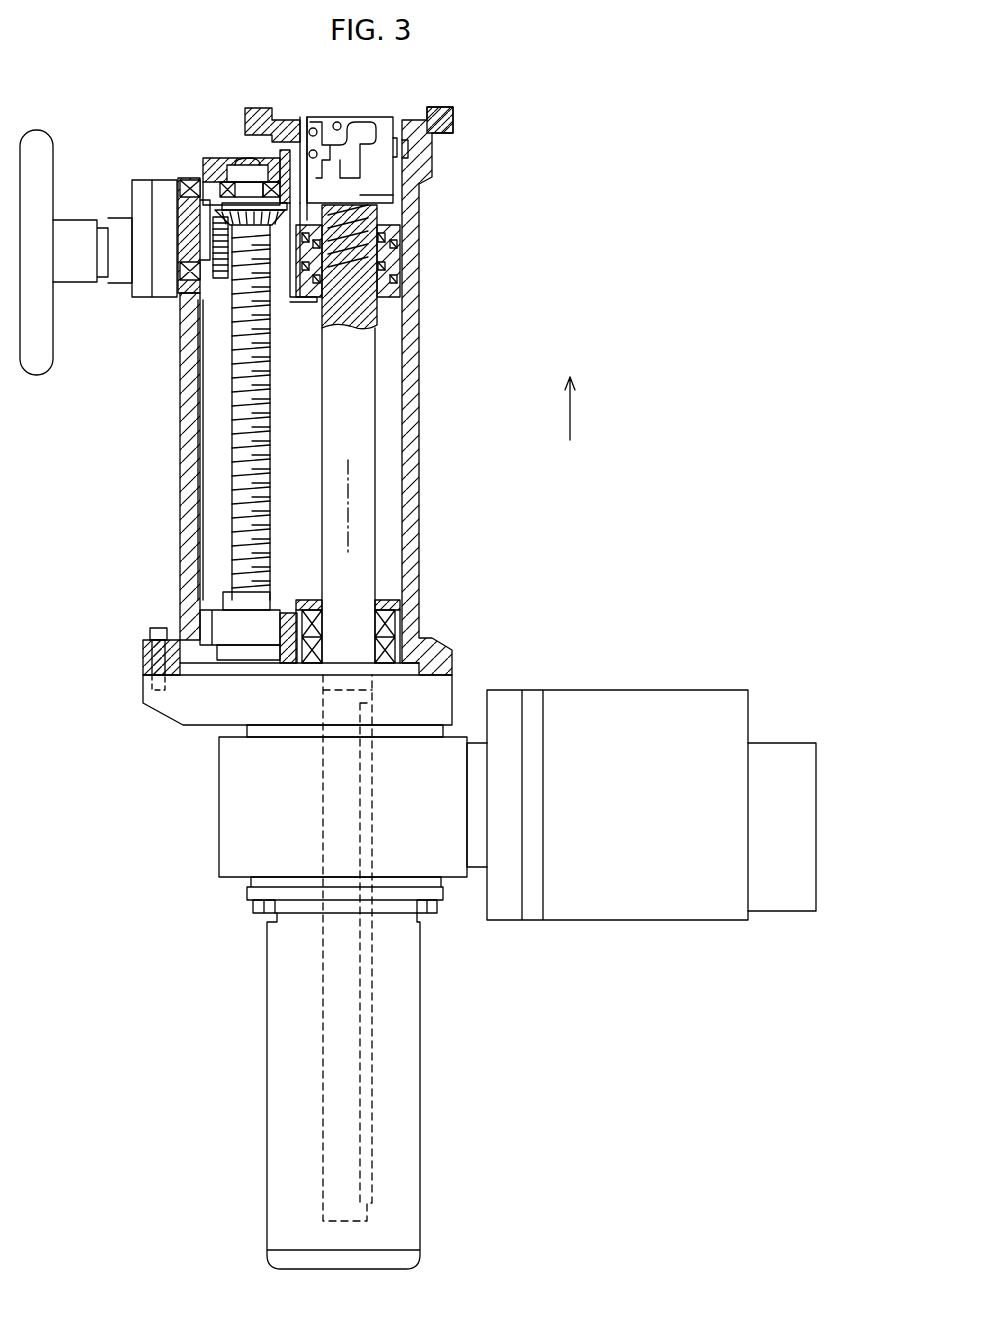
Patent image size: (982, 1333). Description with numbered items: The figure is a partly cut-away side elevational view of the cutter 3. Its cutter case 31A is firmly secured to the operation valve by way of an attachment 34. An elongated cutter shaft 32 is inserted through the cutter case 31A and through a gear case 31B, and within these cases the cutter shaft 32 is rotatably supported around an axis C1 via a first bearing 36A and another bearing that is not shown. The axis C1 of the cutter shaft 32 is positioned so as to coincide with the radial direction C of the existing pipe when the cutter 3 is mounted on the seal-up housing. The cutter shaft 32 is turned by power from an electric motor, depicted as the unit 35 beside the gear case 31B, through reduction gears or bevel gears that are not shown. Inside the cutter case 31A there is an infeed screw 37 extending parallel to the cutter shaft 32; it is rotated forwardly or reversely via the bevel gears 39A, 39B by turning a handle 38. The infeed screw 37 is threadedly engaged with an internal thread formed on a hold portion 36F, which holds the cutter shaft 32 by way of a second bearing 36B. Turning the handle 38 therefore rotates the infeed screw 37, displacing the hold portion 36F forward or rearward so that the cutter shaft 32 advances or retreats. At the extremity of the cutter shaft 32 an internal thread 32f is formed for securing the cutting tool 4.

The cutter 3 is at (568, 297).
The cutting tool 4 is at (360, 116).
The attachment 34 is at (452, 122).
The bevel gear 39B is at (210, 187).
The first bearing 36A is at (390, 253).
The internal thread 32f is at (355, 258).
The bevel gear 39A is at (197, 302).
The cutter case 31A is at (412, 360).
The handle 38 is at (37, 358).
The radial direction C is at (570, 410).
The infeed screw 37 is at (242, 415).
The cutter shaft 32 is at (360, 430).
The axis C1 is at (347, 480).
The hold portion 36F is at (228, 630).
The second bearing 36B is at (388, 613).
The motor 35 is at (635, 712).
The gear case 31B is at (240, 813).